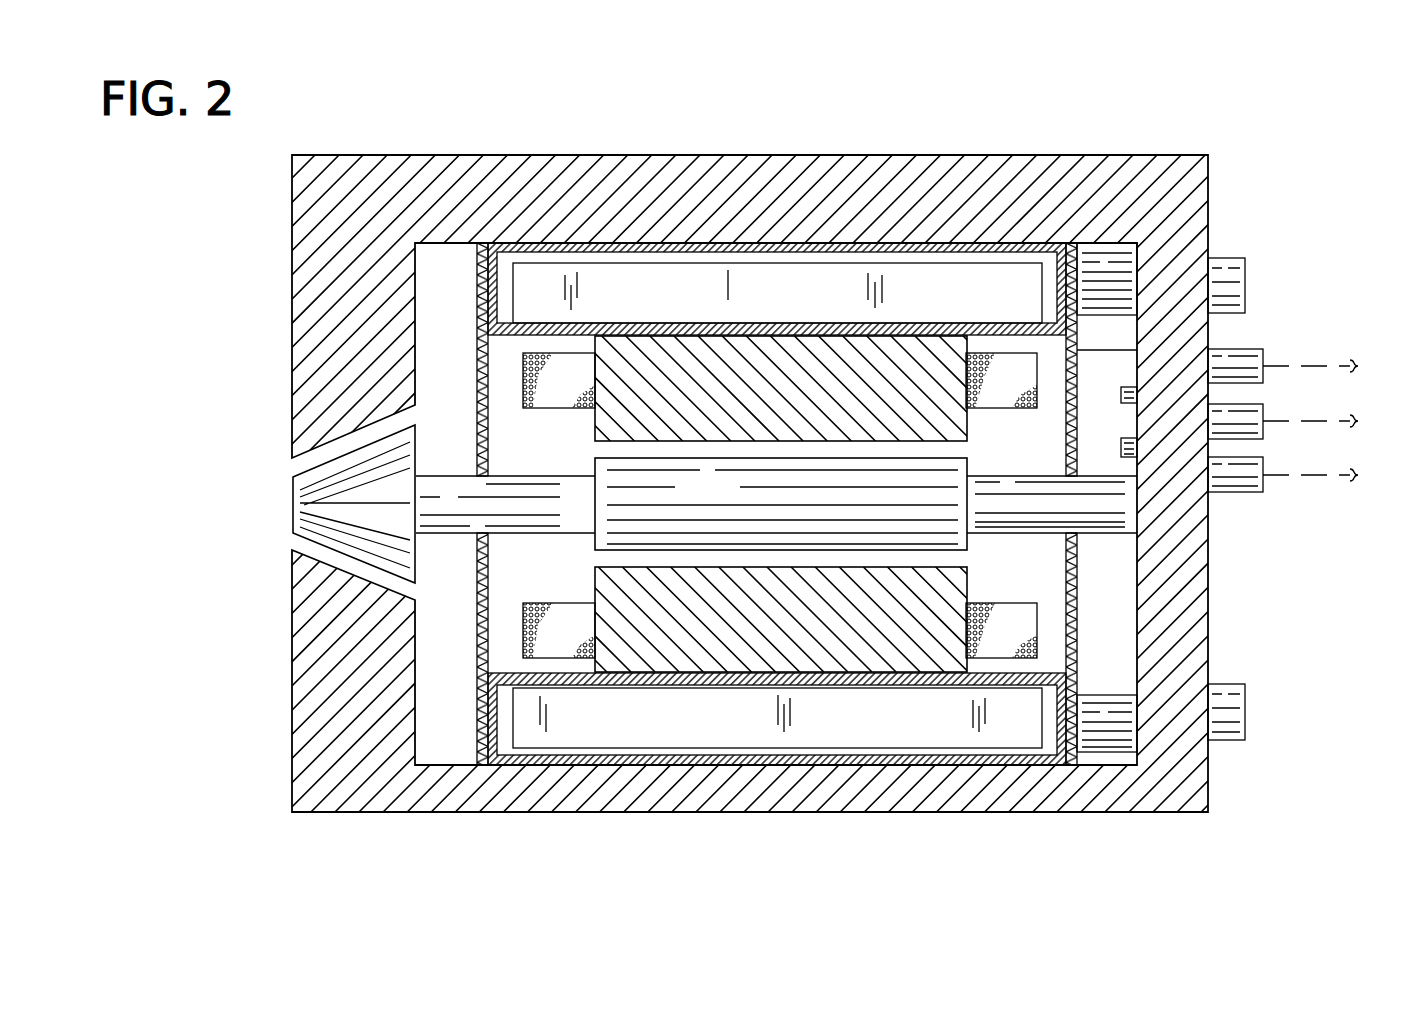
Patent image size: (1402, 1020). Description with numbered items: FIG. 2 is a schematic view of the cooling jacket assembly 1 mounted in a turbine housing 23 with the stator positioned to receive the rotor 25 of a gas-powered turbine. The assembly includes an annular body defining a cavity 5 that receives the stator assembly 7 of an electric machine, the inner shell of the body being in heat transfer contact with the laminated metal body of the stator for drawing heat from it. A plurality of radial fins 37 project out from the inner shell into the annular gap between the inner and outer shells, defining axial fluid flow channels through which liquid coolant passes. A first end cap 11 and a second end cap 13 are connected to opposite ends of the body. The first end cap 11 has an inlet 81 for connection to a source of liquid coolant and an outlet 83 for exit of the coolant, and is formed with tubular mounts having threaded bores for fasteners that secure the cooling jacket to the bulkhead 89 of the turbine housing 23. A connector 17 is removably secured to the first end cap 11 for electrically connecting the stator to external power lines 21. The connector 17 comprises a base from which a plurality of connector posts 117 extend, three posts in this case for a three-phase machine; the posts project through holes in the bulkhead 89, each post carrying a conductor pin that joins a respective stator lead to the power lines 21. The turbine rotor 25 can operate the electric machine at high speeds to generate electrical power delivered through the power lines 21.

The cooling jacket assembly 1 is at (869, 244).
The cavity 5 is at (552, 449).
The stator assembly 7 is at (1042, 620).
The first end cap 11 is at (1082, 580).
The second end cap 13 is at (477, 708).
The connector 17 is at (1292, 385).
The power lines 21 is at (1356, 362).
The turbine housing 23 is at (731, 794).
The rotor 25 is at (335, 503).
The radial fins 37 is at (987, 263).
The inlet 81 is at (1247, 712).
The outlet 83 is at (1247, 287).
The bulkhead 89 is at (1190, 570).
The connector posts 117 is at (1263, 354).